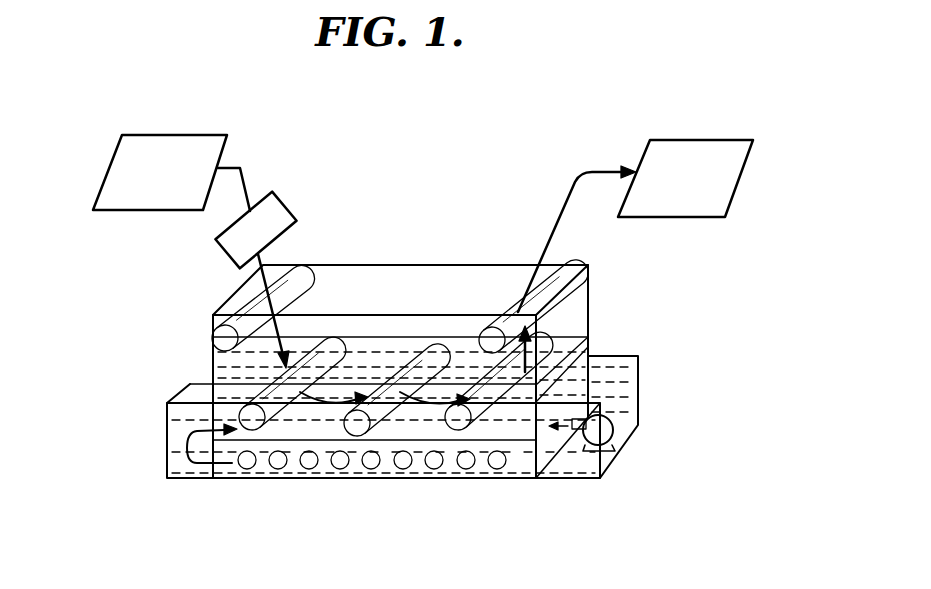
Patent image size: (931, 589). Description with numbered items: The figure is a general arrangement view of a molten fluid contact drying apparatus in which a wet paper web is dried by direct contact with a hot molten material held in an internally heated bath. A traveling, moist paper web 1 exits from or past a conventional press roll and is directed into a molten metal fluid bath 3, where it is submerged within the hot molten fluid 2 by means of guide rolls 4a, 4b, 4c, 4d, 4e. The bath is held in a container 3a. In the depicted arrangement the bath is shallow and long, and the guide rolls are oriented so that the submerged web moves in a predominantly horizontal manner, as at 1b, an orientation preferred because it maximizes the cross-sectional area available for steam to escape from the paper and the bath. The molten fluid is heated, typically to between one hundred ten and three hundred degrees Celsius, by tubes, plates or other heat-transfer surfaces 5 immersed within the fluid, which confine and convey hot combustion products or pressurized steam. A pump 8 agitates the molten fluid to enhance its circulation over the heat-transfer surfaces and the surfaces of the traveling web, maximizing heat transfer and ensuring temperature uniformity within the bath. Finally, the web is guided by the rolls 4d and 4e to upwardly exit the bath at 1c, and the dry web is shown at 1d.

The moist paper web 1 is at (140, 138).
The submerged paper web 1b is at (340, 392).
The exiting web 1c is at (553, 212).
The dry web 1d is at (699, 160).
The molten fluid 2 is at (177, 417).
The molten metal fluid bath 3 is at (200, 352).
The container 3a is at (187, 390).
The guide roll 4a is at (297, 282).
The guide roll 4b is at (242, 432).
The guide roll 4c is at (357, 436).
The guide roll 4d is at (460, 432).
The guide roll 4e is at (570, 284).
The heat-transfer surfaces 5 is at (500, 468).
The pump 8 is at (613, 427).